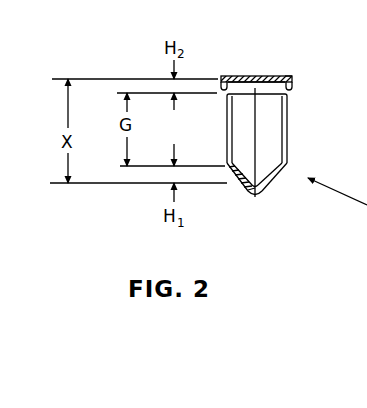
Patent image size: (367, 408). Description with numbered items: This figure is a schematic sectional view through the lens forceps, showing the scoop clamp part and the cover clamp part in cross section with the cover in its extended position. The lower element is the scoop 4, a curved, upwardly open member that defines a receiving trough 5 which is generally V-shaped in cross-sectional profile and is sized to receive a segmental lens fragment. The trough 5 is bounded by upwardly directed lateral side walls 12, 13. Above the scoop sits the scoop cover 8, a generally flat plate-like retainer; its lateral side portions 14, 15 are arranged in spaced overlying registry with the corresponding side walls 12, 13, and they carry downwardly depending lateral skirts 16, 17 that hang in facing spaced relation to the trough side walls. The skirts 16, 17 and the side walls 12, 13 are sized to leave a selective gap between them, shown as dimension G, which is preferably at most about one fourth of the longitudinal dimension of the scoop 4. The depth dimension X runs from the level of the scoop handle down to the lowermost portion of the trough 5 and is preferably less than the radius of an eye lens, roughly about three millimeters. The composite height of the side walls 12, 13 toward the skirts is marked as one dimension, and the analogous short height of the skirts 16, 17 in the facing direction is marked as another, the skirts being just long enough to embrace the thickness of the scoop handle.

The scoop 4 is at (252, 205).
The receiving trough 5 is at (265, 123).
The scoop cover 8 is at (258, 77).
The lateral side wall 12 is at (226, 182).
The lateral side wall 13 is at (278, 188).
The lateral side portion 14 is at (228, 82).
The lateral side portion 15 is at (290, 77).
The lateral skirt 16 is at (223, 83).
The lateral skirt 17 is at (292, 83).